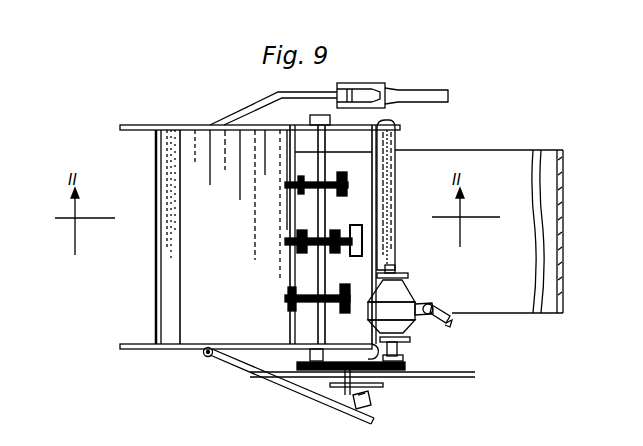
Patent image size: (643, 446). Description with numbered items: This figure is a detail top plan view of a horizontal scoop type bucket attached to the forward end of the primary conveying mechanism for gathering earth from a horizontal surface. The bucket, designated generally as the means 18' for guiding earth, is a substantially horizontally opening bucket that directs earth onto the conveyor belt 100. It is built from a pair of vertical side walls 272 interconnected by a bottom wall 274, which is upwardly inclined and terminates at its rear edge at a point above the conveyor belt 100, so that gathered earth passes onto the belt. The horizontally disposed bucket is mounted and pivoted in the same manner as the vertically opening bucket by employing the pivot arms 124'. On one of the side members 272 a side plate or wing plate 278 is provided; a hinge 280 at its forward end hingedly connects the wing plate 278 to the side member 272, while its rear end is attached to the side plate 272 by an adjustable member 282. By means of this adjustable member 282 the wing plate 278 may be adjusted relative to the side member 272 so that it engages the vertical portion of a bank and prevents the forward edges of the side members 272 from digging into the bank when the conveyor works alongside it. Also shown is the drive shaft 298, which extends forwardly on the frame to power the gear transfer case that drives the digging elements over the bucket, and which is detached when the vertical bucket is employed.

The means for guiding earth 18' is at (169, 93).
The vertical side walls 272 is at (197, 125).
The bottom wall 274 is at (192, 270).
The pivot arms 124' is at (334, 231).
The conveyor belt 100 is at (548, 294).
The drive shaft 298 is at (445, 321).
The hinge 280 is at (208, 358).
The wing plate 278 is at (291, 387).
The adjustable member 282 is at (364, 398).